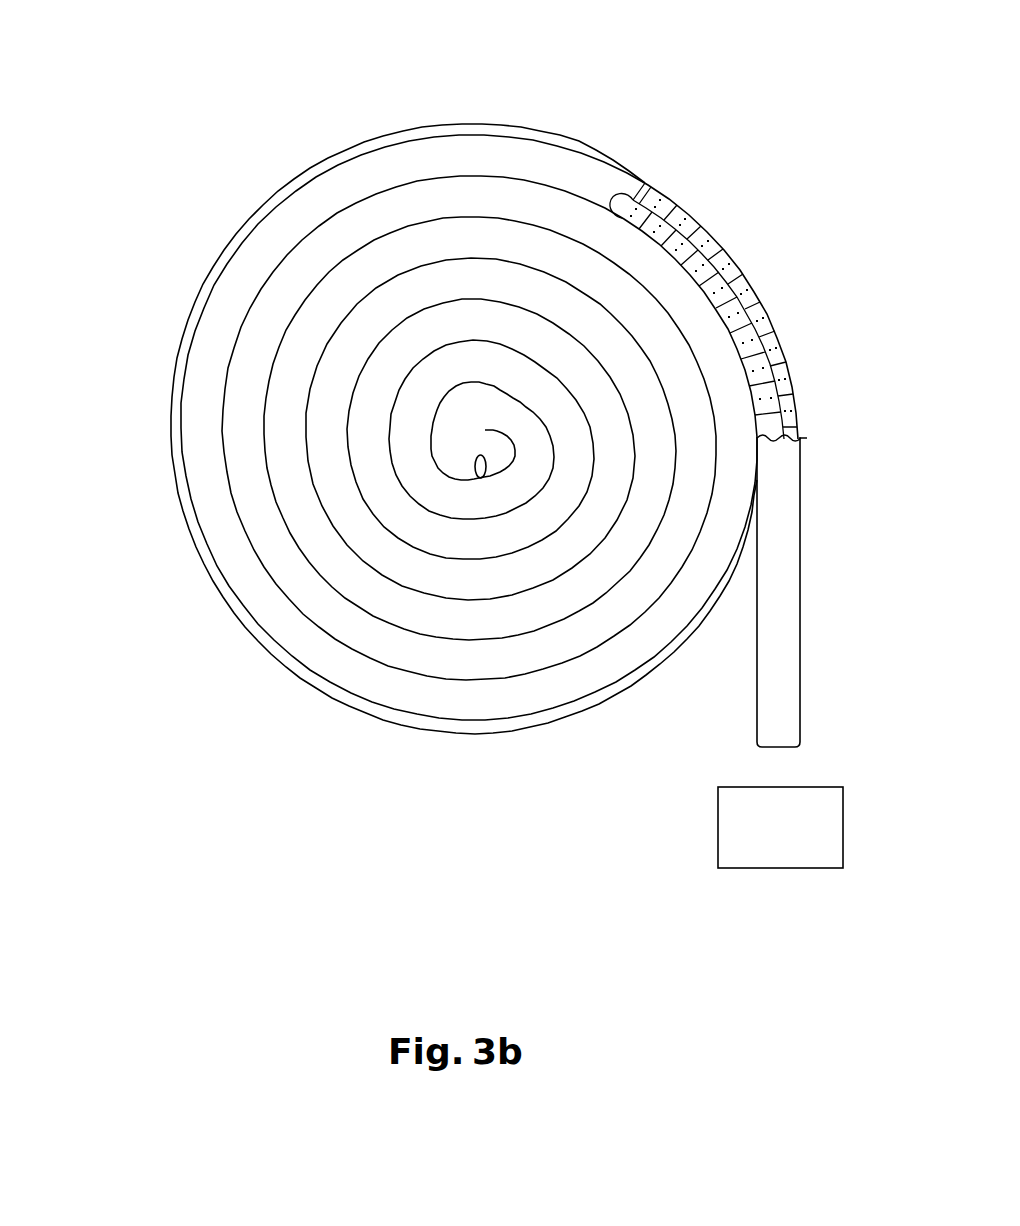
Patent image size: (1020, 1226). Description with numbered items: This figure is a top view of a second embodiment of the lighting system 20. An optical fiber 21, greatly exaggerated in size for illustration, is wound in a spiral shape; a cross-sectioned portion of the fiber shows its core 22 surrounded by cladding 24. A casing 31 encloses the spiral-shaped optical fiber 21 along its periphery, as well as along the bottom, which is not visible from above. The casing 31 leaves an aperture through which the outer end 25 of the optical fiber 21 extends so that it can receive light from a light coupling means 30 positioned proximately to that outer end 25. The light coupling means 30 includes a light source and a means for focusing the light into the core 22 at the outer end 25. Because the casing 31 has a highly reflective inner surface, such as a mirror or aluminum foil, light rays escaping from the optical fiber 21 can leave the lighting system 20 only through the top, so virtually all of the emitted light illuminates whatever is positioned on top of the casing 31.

The lighting system 20 is at (843, 105).
The optical fiber 21 is at (205, 447).
The core 22 is at (757, 333).
The cladding 24 is at (723, 250).
The outer end 25 is at (780, 750).
The light coupling means 30 is at (780, 828).
The casing 31 is at (265, 648).